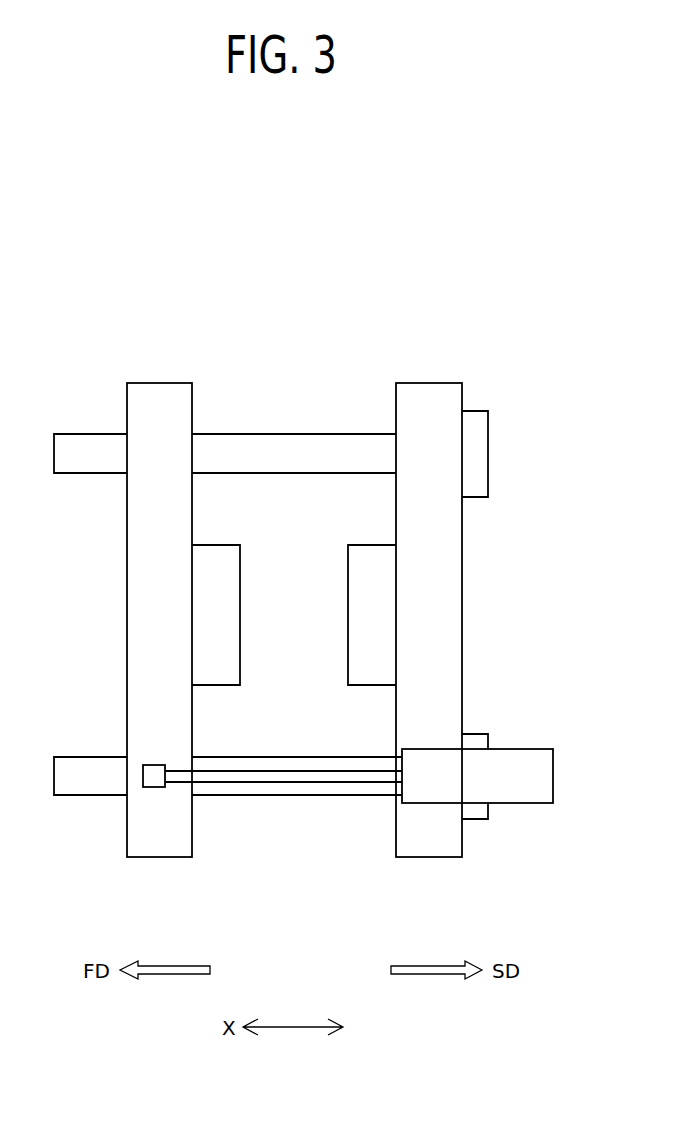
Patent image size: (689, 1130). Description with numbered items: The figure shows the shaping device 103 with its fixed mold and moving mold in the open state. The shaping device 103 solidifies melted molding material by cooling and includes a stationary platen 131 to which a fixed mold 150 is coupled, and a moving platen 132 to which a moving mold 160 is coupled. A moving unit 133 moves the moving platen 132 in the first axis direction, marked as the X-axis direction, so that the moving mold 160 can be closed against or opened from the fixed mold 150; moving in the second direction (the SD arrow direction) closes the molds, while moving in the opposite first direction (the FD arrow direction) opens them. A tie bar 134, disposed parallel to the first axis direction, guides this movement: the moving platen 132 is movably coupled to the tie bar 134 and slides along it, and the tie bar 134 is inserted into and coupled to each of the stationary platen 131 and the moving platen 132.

The shaping device 103 is at (87, 326).
The stationary platen 131 is at (425, 400).
The moving platen 132 is at (159, 400).
The moving unit 133 is at (514, 788).
The tie bar 134 is at (293, 448).
The fixed mold 150 is at (362, 583).
The moving mold 160 is at (228, 652).